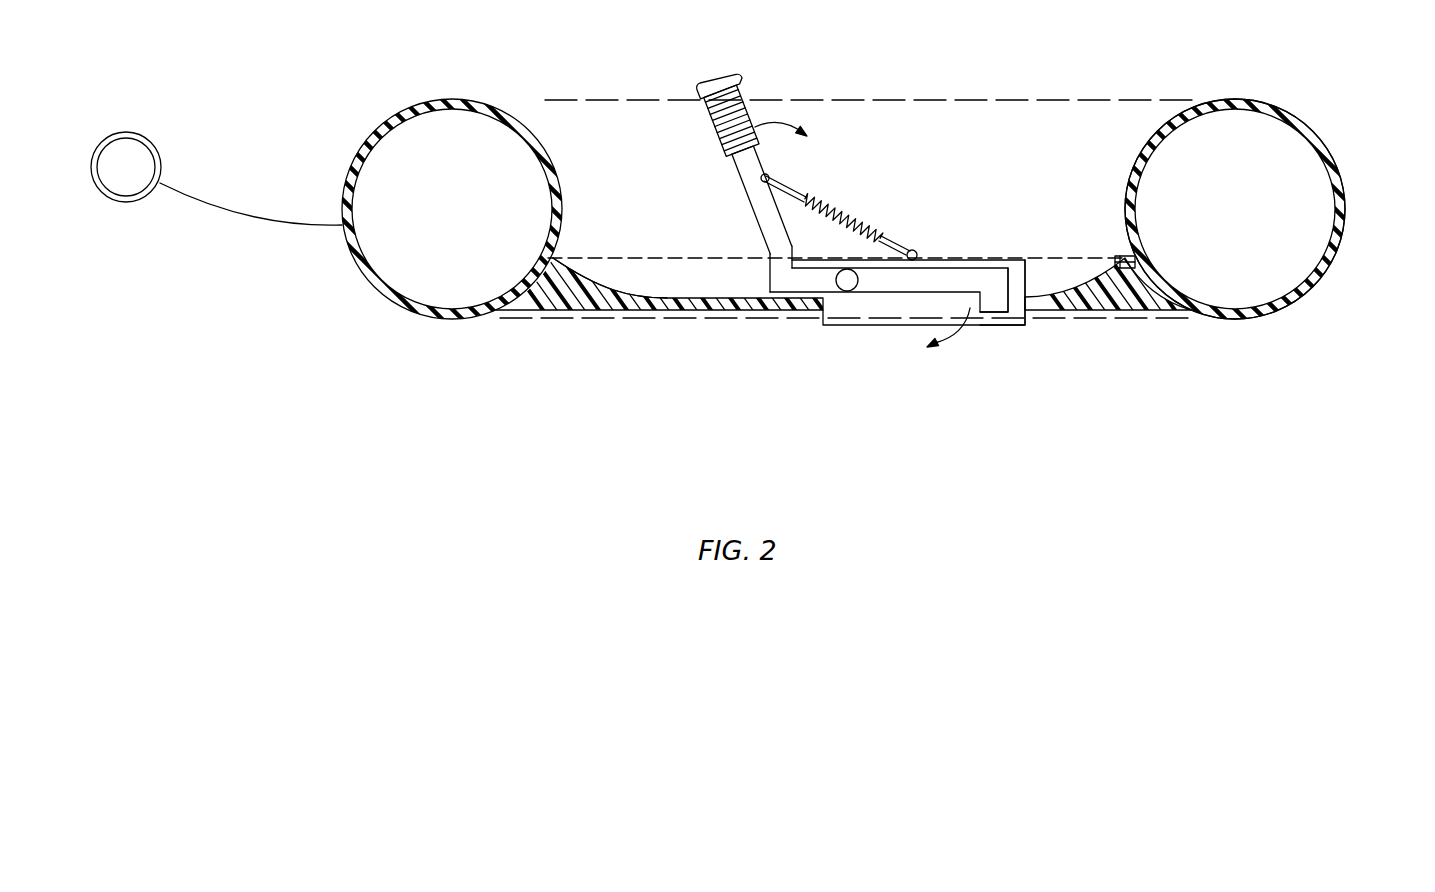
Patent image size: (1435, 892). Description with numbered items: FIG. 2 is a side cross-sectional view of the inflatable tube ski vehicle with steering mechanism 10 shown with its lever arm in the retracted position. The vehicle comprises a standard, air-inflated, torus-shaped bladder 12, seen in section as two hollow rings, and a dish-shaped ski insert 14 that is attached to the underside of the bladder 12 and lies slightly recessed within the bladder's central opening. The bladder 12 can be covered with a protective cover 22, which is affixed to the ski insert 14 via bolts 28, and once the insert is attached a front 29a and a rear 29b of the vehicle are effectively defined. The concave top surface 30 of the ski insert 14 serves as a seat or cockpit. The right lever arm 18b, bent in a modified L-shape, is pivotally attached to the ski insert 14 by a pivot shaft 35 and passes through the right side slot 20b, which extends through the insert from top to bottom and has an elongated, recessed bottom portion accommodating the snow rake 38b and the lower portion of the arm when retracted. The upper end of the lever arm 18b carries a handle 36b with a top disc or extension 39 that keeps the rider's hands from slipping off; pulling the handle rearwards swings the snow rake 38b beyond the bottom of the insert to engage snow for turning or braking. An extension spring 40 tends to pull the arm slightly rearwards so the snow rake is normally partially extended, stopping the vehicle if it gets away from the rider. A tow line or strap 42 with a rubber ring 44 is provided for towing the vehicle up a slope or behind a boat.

The inflatable tube ski vehicle with steering mechanism 10 is at (452, 410).
The bladder 12 is at (1345, 213).
The dish-shaped ski insert 14 is at (543, 298).
The right lever arm 18b is at (752, 194).
The right side slot 20b is at (876, 308).
The protective cover 22 is at (1309, 117).
The bolts 28 is at (1134, 257).
The front 29a is at (355, 300).
The rear 29b is at (1338, 288).
The concave top surface 30 is at (584, 272).
The pivot shaft 35 is at (845, 283).
The right handle 36b is at (712, 123).
The right snow rake 38b is at (997, 313).
The top disc or extension 39 is at (731, 68).
The extension spring 40 is at (850, 209).
The tow line or strap 42 is at (213, 204).
The rubber ring 44 is at (125, 128).